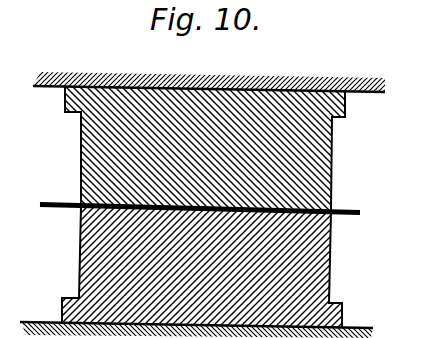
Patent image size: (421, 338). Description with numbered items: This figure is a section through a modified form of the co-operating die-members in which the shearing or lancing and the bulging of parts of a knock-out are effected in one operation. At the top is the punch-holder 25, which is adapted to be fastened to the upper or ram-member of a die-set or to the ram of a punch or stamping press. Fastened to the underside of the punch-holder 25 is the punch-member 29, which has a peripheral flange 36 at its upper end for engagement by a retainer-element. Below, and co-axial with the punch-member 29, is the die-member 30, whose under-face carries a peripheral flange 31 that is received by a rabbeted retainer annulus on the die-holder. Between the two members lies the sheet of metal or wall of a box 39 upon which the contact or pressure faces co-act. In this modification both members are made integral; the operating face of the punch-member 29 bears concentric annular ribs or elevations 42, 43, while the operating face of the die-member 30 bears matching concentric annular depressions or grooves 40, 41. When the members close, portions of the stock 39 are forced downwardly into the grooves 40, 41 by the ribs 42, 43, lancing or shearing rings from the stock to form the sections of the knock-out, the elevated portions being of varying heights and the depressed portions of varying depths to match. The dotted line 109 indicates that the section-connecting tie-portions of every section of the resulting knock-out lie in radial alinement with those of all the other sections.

The punch-holder 25 is at (46, 89).
The punch-member 29 is at (333, 138).
The die-member 30 is at (330, 260).
The peripheral flange 31 is at (341, 315).
The peripheral flange 36 is at (349, 103).
The sheet of metal or wall of a box 39 is at (346, 207).
The annular depression or groove 40 is at (250, 213).
The annular depression or groove 41 is at (278, 213).
The annular rib or elevation 42 is at (248, 207).
The annular rib or elevation 43 is at (275, 207).
The dotted line 109 is at (236, 222).